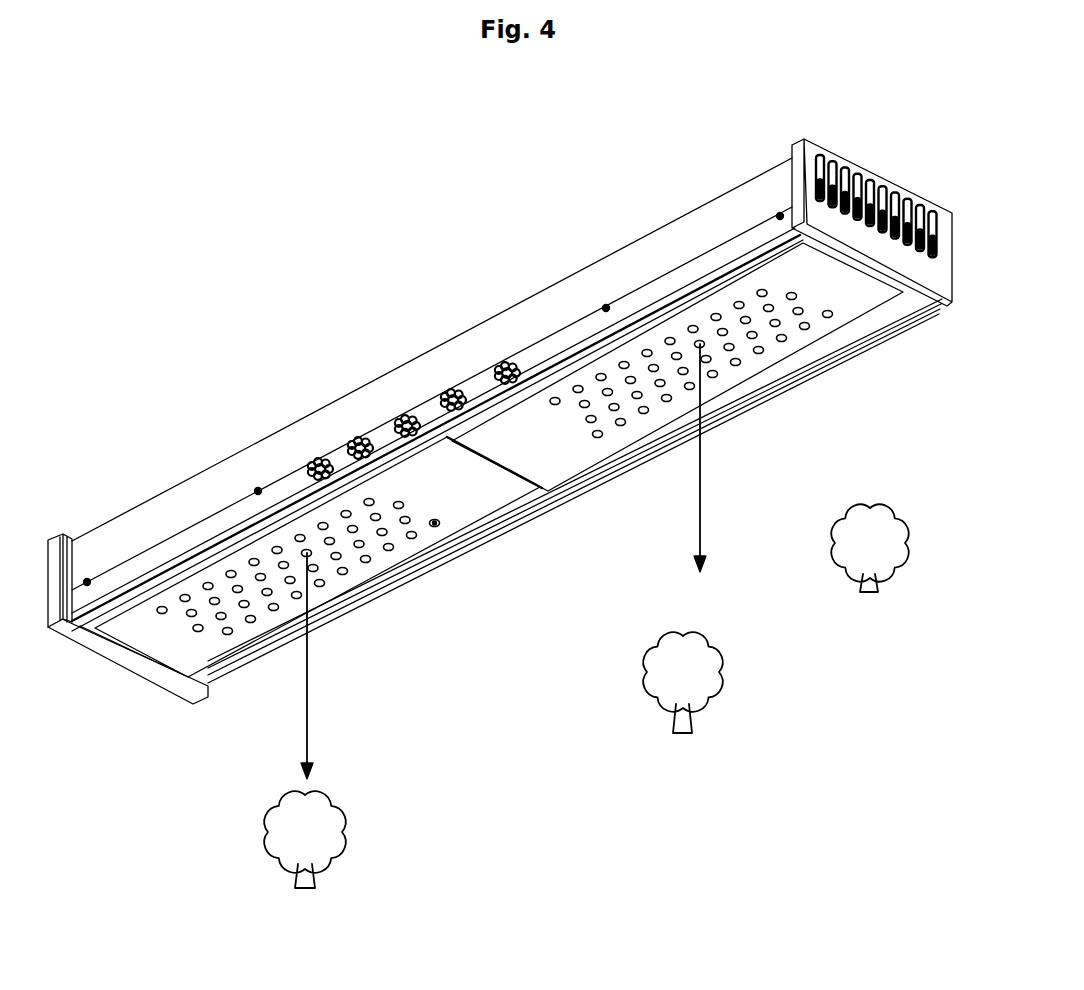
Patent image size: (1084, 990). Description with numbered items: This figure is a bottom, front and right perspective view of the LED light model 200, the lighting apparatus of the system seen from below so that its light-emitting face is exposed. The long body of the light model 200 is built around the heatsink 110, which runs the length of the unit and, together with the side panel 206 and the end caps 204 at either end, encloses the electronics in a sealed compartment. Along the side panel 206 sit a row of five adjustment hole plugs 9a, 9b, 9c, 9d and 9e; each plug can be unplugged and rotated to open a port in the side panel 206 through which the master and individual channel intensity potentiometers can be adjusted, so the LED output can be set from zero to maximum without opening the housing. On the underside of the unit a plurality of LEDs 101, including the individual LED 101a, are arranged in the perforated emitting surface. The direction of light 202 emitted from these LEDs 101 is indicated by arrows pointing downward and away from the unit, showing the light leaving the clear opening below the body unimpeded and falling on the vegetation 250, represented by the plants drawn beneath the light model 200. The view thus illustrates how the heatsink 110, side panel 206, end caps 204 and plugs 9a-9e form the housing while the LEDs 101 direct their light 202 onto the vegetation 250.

The LED light model 200 is at (312, 206).
The heatsink 110 is at (688, 228).
The adjustment hole plug 9a is at (318, 462).
The adjustment hole plug 9b is at (357, 440).
The adjustment hole plug 9c is at (403, 413).
The adjustment hole plug 9d is at (450, 385).
The adjustment hole plug 9e is at (503, 363).
The end cap 204 is at (55, 532).
The side panel 206 is at (212, 537).
The LED 101 is at (587, 437).
The LED 101a is at (434, 523).
The direction of light 202 is at (700, 490).
The vegetation 250 is at (665, 678).